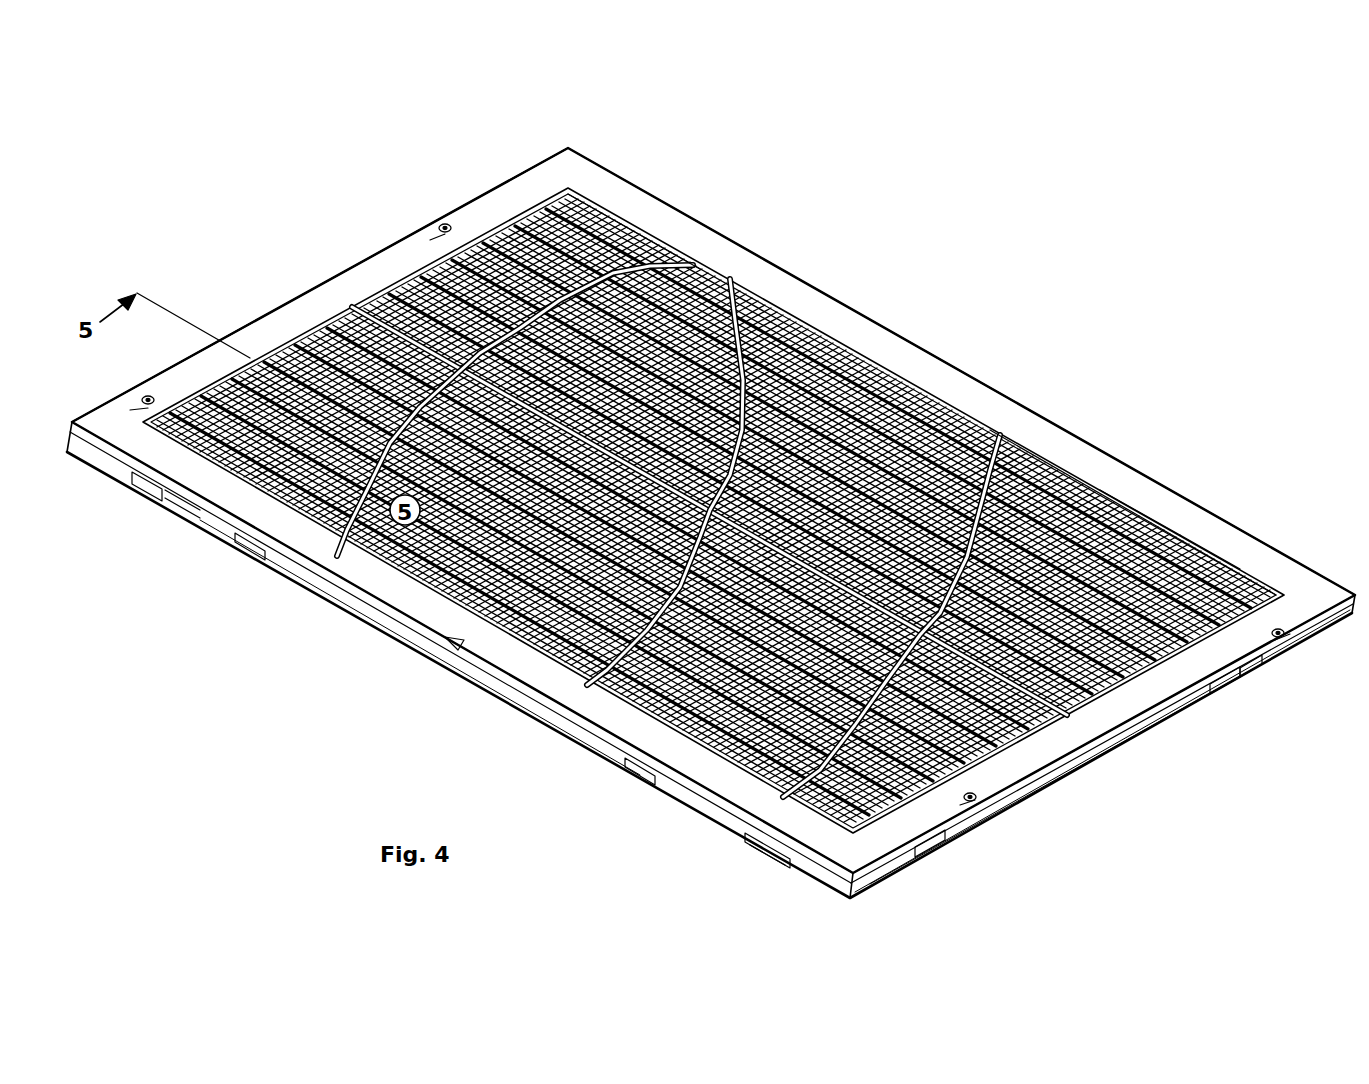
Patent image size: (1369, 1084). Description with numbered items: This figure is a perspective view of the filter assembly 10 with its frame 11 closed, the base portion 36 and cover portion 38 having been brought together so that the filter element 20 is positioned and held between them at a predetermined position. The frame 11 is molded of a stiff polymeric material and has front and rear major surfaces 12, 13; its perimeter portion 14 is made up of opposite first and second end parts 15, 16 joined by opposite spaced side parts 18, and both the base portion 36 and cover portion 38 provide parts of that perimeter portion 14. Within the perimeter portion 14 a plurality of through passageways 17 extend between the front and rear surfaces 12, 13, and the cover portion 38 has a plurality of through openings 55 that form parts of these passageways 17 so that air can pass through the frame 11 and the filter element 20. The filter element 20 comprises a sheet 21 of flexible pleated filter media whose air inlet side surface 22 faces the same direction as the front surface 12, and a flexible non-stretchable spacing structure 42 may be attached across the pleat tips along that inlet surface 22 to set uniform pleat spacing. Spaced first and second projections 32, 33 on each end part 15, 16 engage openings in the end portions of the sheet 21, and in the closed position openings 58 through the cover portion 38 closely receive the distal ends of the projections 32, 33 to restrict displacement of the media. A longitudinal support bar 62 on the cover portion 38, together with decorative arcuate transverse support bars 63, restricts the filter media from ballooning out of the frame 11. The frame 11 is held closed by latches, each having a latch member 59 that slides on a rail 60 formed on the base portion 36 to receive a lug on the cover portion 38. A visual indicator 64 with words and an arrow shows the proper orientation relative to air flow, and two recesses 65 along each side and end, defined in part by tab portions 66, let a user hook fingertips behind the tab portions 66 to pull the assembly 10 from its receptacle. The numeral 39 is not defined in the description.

The filter assembly 10 is at (1052, 286).
The frame 11 is at (1103, 455).
The front major surface 12 is at (1068, 745).
The rear major surface 13 is at (1158, 737).
The perimeter portion 14 is at (572, 702).
The first end part 15 is at (330, 276).
The second end part 16 is at (1125, 742).
The through passageways 17 is at (670, 270).
The side parts 18 is at (1008, 420).
The filter element 20 is at (872, 408).
The sheet of filter media 21 is at (797, 307).
The air inlet side surface 22 is at (1233, 562).
The first projection 32 is at (140, 399).
The second projection 33 is at (443, 225).
The base portion 36 is at (1250, 672).
The cover portion 38 is at (1132, 485).
The latch slot 39 is at (178, 505).
The spacing structure 42 is at (1180, 528).
The through openings 55 is at (565, 183).
The openings 58 is at (447, 222).
The latch member 59 is at (770, 858).
The rail 60 is at (138, 488).
The longitudinal support bar 62 is at (318, 316).
The arcuate transverse support bars 63 is at (645, 222).
The visual indicator 64 is at (455, 662).
The recesses 65 is at (258, 555).
The tab portions 66 is at (295, 572).